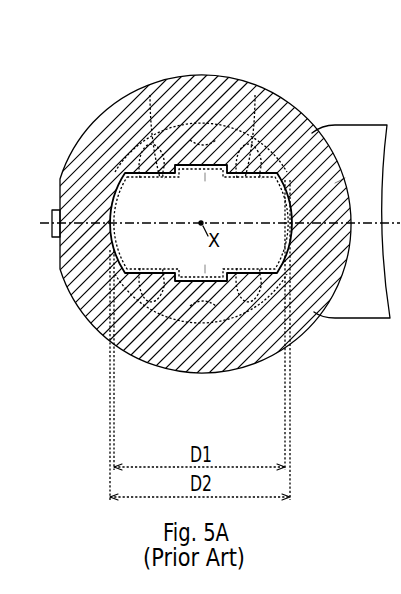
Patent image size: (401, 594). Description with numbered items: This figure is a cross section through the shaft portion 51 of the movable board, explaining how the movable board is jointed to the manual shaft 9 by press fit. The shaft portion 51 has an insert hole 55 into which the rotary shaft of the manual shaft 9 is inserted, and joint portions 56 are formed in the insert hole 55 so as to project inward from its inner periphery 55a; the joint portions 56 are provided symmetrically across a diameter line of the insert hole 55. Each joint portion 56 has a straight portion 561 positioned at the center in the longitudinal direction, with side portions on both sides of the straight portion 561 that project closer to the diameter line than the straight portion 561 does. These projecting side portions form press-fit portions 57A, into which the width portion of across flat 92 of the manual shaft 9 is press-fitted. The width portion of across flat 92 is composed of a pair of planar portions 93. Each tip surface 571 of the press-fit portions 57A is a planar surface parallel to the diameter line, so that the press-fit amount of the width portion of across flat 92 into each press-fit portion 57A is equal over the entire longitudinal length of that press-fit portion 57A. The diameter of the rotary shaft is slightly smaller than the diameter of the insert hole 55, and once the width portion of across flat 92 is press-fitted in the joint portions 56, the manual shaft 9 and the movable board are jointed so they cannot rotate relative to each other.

The manual shaft 9 is at (55, 175).
The shaft portion 51 is at (200, 217).
The insert hole 55 is at (160, 216).
The inner periphery 55a is at (97, 140).
The joint portions 56 is at (187, 142).
The press-fit portions 57A is at (150, 140).
The straight portion 561 is at (203, 150).
The tip surfaces 571 is at (163, 80).
The width portion of across flat 92 is at (346, 241).
The planar portions 93 is at (211, 175).